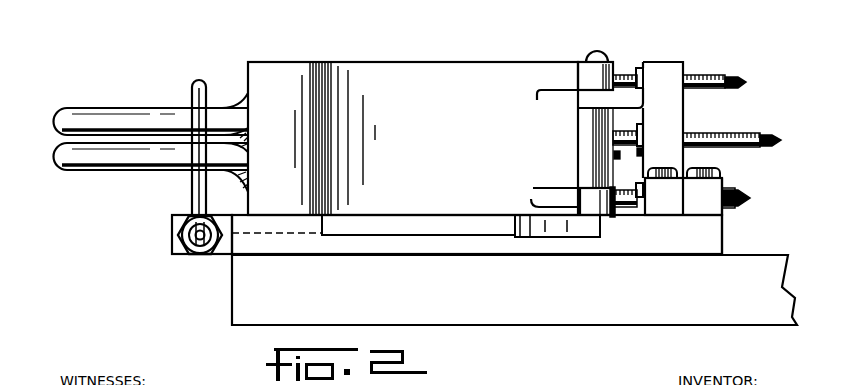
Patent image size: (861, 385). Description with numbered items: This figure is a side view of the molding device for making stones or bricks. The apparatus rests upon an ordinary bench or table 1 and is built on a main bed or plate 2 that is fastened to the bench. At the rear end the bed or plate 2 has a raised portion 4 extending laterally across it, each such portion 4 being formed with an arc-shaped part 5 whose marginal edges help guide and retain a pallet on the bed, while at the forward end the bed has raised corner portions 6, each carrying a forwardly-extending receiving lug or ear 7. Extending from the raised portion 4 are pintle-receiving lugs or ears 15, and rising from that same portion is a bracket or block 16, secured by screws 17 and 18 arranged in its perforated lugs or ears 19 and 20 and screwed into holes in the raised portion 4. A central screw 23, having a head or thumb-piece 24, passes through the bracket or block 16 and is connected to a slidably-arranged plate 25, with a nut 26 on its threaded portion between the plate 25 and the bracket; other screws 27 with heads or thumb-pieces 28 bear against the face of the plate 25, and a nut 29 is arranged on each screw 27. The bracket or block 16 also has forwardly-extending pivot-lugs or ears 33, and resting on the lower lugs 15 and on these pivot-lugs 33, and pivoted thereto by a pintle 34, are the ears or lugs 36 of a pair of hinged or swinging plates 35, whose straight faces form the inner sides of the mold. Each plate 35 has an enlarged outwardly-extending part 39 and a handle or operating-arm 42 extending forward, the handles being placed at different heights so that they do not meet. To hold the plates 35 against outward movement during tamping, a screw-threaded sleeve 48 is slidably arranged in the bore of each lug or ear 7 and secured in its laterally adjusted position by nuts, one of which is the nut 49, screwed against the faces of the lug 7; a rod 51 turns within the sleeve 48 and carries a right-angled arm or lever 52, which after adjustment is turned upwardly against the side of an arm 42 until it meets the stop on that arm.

The bench or table 1 is at (520, 318).
The main bed or plate 2 is at (447, 243).
The raised portion 4 is at (726, 224).
The arc-shaped part 5 is at (565, 232).
The raised corner portion 6 is at (283, 224).
The receiving lug or ear 7 is at (172, 232).
The pintle-receiving lug or ear 15 is at (612, 216).
The bracket or block 16 is at (672, 75).
The screw 17 is at (672, 160).
The screw 18 is at (726, 160).
The perforated lug or ear 19 is at (678, 206).
The perforated lug or ear 20 is at (725, 185).
The central screw 23 is at (720, 129).
The head or thumb-piece 24 is at (778, 124).
The slidably-arranged plate 25 is at (607, 166).
The nut 26 is at (640, 135).
The screw 27 is at (708, 78).
The head or thumb-piece 28 is at (746, 82).
The nut 29 is at (641, 68).
The pivot-lug or ear 33 is at (590, 98).
The pintle 34 is at (600, 56).
The hinged or swinging plate 35 is at (413, 68).
The ear or lug 36 is at (586, 75).
The enlarged outwardly-extending part 39 is at (311, 62).
The handle or operating-arm 42 is at (58, 148).
The sleeve 48 is at (207, 252).
The nut 49 is at (185, 218).
The rod 51 is at (190, 250).
The right-angled arm or lever 52 is at (205, 80).